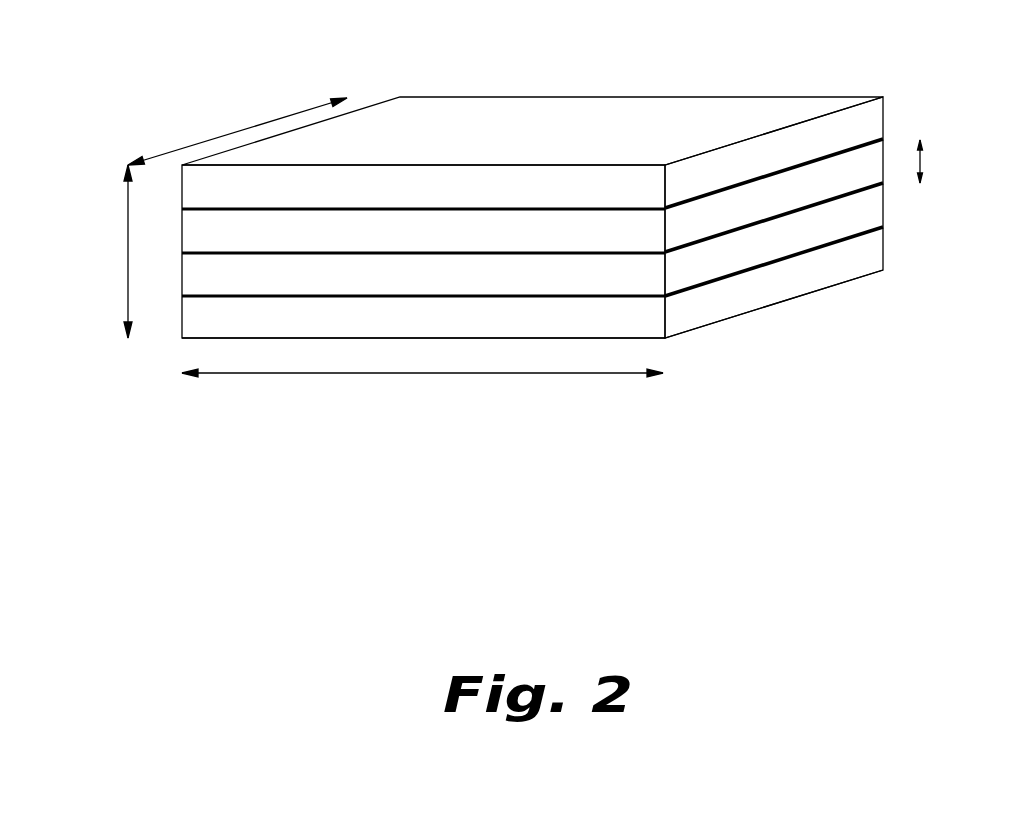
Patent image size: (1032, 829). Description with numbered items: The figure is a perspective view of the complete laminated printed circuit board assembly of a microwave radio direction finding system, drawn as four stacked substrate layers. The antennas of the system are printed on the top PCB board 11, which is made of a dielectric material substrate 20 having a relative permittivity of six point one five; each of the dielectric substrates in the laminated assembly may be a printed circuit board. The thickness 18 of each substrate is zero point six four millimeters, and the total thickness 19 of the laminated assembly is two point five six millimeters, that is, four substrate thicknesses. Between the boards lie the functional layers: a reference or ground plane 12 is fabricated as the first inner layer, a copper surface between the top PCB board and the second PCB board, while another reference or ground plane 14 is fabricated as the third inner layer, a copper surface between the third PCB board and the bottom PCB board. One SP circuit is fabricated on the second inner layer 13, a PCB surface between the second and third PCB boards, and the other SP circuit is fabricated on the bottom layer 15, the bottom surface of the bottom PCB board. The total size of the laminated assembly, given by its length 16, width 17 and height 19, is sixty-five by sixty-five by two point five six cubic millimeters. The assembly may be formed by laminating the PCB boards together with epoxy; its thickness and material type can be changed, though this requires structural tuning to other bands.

The top PCB board 11 is at (572, 122).
The ground plane 12 is at (775, 158).
The INNER-2 layer 13 is at (833, 218).
The ground plane 14 is at (712, 302).
The bottom layer 15 is at (782, 318).
The length 16 is at (430, 390).
The width 17 is at (208, 124).
The thickness 18 is at (935, 154).
The total thickness 19 is at (113, 251).
The dielectric material substrate 20 is at (296, 322).